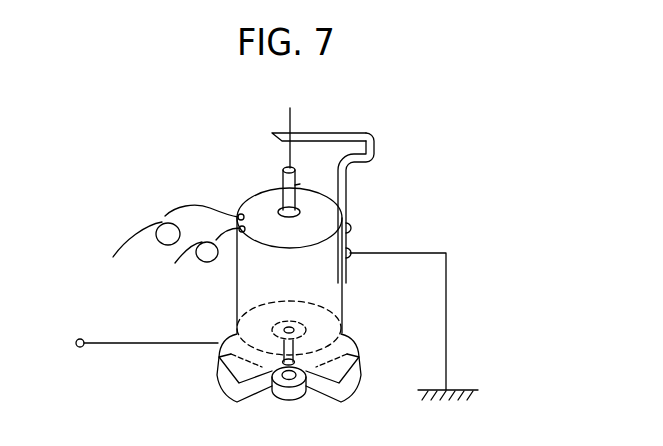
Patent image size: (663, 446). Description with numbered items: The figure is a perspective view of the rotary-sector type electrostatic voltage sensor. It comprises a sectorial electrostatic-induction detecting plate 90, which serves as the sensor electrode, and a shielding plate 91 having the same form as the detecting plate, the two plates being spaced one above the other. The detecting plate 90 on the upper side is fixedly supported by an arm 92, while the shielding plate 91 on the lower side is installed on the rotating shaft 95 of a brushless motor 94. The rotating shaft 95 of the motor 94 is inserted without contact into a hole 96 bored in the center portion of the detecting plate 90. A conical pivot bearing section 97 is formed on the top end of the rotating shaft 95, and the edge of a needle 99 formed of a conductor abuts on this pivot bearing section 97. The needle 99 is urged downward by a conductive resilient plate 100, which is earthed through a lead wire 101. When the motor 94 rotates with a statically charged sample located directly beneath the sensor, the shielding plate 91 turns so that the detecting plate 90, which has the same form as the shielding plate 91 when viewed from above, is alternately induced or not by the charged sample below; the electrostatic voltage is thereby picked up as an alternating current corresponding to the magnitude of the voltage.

The electrostatic-induction detecting plate 90 is at (350, 347).
The shielding plate 91 is at (348, 397).
The arm 92 is at (110, 345).
The brushless motor 94 is at (237, 287).
The rotating shaft 95 is at (283, 187).
The hole 96 is at (281, 368).
The conical pivot bearing section 97 is at (283, 170).
The needle 99 is at (288, 160).
The resilient plate 100 is at (372, 135).
The lead wire 101 is at (447, 294).